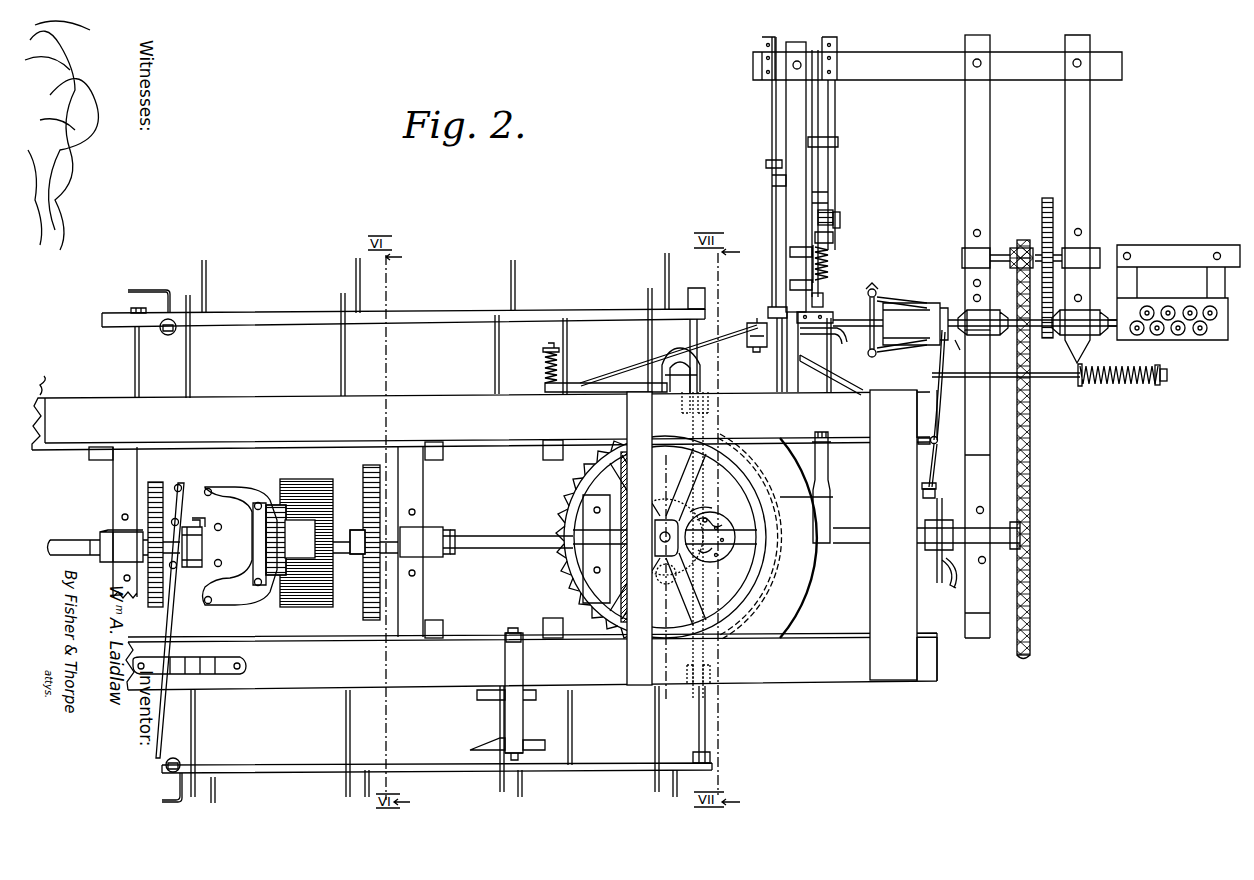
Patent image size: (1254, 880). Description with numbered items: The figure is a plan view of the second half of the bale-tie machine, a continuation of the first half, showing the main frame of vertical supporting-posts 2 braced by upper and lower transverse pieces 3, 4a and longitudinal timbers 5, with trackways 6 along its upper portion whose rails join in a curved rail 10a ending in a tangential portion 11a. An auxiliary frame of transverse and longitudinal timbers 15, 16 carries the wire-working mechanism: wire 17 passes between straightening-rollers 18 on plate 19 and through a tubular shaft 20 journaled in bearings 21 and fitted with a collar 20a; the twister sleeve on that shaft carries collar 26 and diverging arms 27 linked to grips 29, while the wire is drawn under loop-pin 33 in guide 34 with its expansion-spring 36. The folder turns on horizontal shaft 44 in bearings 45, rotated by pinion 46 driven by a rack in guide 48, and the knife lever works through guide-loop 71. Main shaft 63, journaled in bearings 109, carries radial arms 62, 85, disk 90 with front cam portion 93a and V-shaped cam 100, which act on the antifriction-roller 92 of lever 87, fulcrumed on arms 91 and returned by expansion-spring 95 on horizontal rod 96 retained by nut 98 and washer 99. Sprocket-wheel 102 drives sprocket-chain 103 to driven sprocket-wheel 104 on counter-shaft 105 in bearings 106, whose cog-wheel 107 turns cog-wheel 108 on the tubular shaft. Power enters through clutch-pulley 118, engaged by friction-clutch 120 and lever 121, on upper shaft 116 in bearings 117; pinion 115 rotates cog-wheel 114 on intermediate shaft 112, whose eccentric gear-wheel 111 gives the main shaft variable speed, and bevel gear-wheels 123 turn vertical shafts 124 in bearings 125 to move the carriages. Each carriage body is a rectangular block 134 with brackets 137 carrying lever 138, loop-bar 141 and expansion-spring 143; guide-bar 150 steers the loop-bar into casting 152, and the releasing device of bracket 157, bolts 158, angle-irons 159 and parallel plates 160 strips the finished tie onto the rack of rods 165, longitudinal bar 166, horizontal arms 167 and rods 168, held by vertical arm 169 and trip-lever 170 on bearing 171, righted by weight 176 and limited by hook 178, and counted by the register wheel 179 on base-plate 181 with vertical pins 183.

The vertical supporting-posts 2 is at (90, 470).
The upper transverse pieces 3 is at (113, 491).
The lower transverse pieces 4a is at (596, 549).
The longitudinal timbers 5 is at (43, 385).
The trackways 6 is at (484, 541).
The curved rail 10a is at (790, 615).
The tangential portion 11a is at (770, 440).
The transverse timbers 15 is at (938, 213).
The longitudinal timbers 16 is at (937, 58).
The wire 17 is at (1113, 330).
The straightening-rollers 18 is at (1157, 336).
The plate 19 is at (1172, 298).
The tubular shaft 20 is at (1003, 334).
The collar 20a is at (973, 357).
The bearings 21 is at (1033, 322).
The collar 26 is at (938, 303).
The diverging arms 27 is at (902, 326).
The grips 29 is at (864, 322).
The loop-pin 33 is at (824, 300).
The guide 34 is at (834, 317).
The expansion-spring 36 is at (830, 270).
The horizontal shaft 44 is at (830, 256).
The bearings 45 is at (830, 200).
The pinion 46 is at (834, 214).
The guide 48 is at (841, 228).
The arm 62 is at (830, 479).
The main shaft 63 is at (62, 537).
The guide-loop 71 is at (768, 308).
The radial arm 85 is at (834, 498).
The lever 87 is at (938, 408).
The disk 90 is at (925, 540).
The arms 91 is at (938, 442).
The antifriction-roller 92 is at (922, 495).
The front cam portion 93a is at (920, 485).
The expansion-spring 95 is at (1118, 384).
The horizontal rod 96 is at (1057, 379).
The nut 98 is at (1168, 378).
The washer 99 is at (1157, 383).
The V-shaped cam 100 is at (952, 588).
The sprocket-wheel 102 is at (1026, 665).
The sprocket-chain 103 is at (1032, 464).
The driven sprocket-wheel 104 is at (1018, 246).
The counter-shaft 105 is at (1001, 262).
The bearings 106 is at (1031, 258).
The cog-wheel 107 is at (1047, 198).
The cog-wheel 108 is at (1047, 335).
The bearings 109 is at (590, 530).
The eccentric gear-wheel 111 is at (155, 482).
The intermediate shaft 112 is at (455, 553).
The cog-wheel 114 is at (363, 470).
The pinion 115 is at (358, 532).
The upper shaft 116 is at (440, 553).
The bearings 117 is at (110, 535).
The clutch-pulley 118 is at (299, 543).
The friction-clutch 120 is at (256, 488).
The lever 121 is at (165, 731).
The bevel gear-wheels 123 is at (668, 497).
The vertical shafts 124 is at (660, 537).
The bearings 125 is at (658, 564).
The rectangular blocks 134 is at (598, 383).
The brackets 137 is at (681, 370).
The lever 138 is at (735, 333).
The loop-bar 141 is at (756, 349).
The expansion-spring 143 is at (545, 358).
The guide-bar 150 is at (848, 385).
The casting 152 is at (830, 342).
The bracket 157 is at (505, 724).
The bolts 158 is at (512, 632).
The angle-irons 159 is at (477, 697).
The parallel plates 160 is at (540, 742).
The rods 165 is at (190, 363).
The longitudinal bar 166 is at (407, 530).
The horizontal arms 167 is at (136, 365).
The rods 168 is at (207, 288).
The vertical arm 169 is at (694, 308).
The trip-lever 170 is at (692, 328).
The bearing 171 is at (712, 680).
The weight 176 is at (168, 336).
The hook 178 is at (153, 292).
The horizontal wheel 179 is at (713, 508).
The base-plate 181 is at (722, 560).
The vertical pins 183 is at (724, 522).